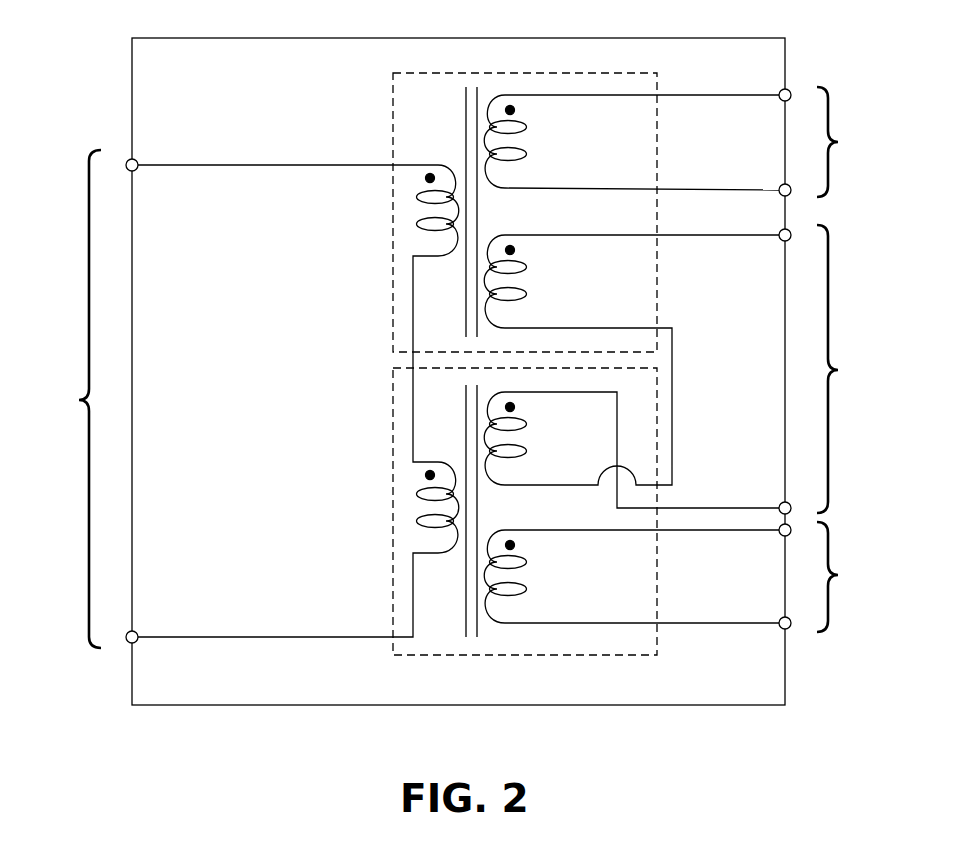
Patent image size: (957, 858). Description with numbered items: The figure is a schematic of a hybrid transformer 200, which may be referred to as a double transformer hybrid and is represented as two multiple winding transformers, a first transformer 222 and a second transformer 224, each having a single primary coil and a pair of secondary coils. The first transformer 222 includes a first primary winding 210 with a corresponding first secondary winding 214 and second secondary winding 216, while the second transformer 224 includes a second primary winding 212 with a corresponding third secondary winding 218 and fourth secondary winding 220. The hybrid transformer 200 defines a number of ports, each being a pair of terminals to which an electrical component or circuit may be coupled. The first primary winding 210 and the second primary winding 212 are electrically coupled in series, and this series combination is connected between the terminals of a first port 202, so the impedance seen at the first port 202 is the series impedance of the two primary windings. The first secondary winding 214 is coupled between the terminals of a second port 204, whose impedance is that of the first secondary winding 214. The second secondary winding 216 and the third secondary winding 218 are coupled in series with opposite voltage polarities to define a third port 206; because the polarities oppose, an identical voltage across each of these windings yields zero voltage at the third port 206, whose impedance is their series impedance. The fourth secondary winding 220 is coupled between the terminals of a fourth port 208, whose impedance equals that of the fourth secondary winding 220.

The hybrid transformer 200 is at (465, 38).
The first port 202 is at (79, 400).
The second port 204 is at (838, 142).
The third port 206 is at (838, 370).
The fourth port 208 is at (838, 575).
The first primary winding 210 is at (416, 224).
The second primary winding 212 is at (416, 521).
The first secondary winding 214 is at (527, 154).
The second secondary winding 216 is at (527, 294).
The third secondary winding 218 is at (527, 451).
The fourth secondary winding 220 is at (527, 589).
The first transformer 222 is at (393, 129).
The second transformer 224 is at (393, 457).